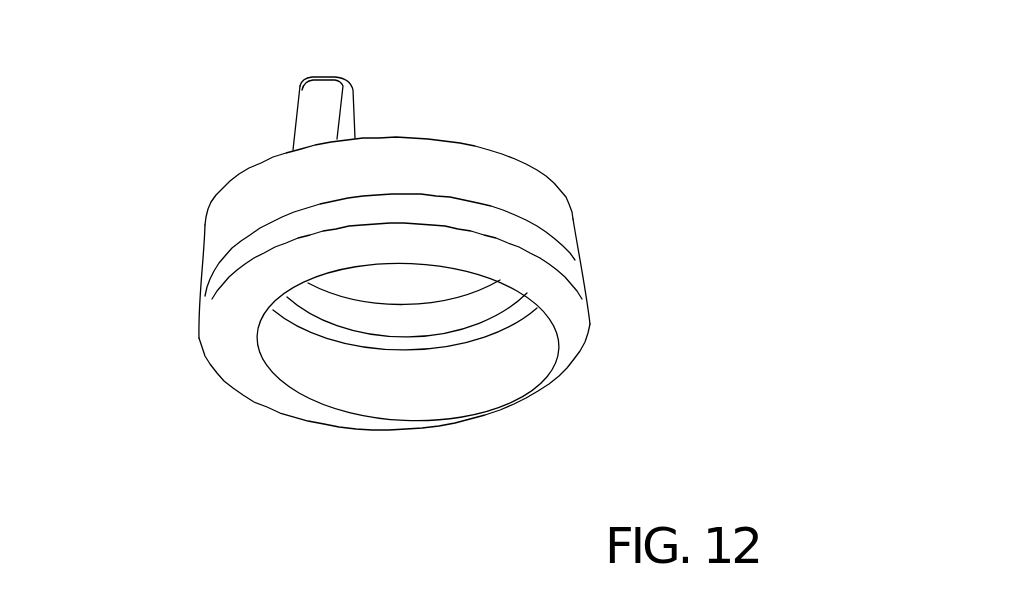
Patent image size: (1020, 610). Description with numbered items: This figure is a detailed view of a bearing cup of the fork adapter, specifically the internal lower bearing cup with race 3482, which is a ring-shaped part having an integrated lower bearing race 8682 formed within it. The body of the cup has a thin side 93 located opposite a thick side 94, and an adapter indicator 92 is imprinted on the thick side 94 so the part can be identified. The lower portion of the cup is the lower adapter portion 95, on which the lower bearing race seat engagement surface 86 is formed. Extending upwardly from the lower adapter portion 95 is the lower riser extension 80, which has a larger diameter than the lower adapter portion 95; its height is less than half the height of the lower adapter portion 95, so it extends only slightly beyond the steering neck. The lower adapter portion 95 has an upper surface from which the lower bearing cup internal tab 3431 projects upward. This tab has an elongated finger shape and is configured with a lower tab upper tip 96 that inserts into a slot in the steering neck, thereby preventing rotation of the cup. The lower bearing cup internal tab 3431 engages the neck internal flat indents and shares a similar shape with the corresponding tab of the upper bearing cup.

The lower riser extension 80 is at (573, 275).
The lower bearing race seat engagement surface 86 is at (500, 175).
The adapter indicator 92 is at (242, 285).
The thin side 93 is at (492, 412).
The thick side 94 is at (367, 243).
The lower adapter portion 95 is at (543, 192).
The lower tab upper tip 96 is at (330, 86).
The lower bearing cup internal tab 3431 is at (293, 117).
The internal lower bearing cup with race 3482 is at (565, 213).
The integrated lower bearing race 8682 is at (337, 392).